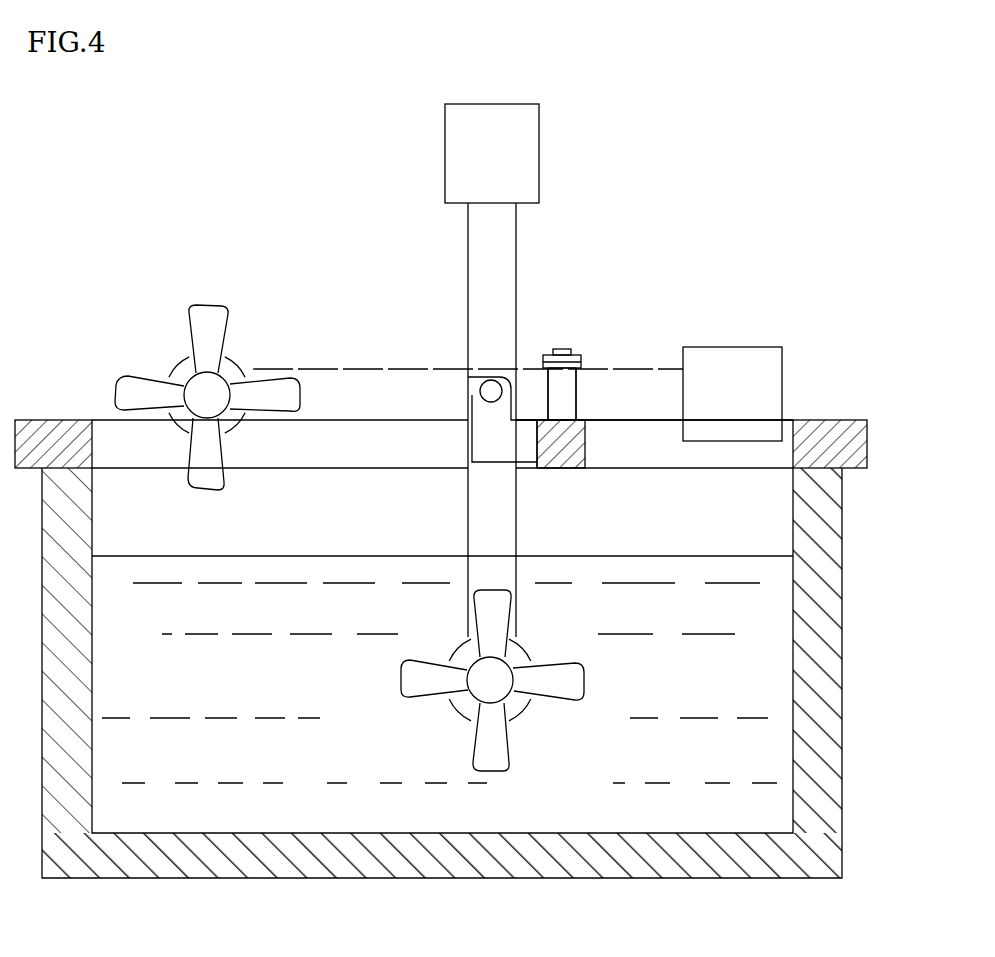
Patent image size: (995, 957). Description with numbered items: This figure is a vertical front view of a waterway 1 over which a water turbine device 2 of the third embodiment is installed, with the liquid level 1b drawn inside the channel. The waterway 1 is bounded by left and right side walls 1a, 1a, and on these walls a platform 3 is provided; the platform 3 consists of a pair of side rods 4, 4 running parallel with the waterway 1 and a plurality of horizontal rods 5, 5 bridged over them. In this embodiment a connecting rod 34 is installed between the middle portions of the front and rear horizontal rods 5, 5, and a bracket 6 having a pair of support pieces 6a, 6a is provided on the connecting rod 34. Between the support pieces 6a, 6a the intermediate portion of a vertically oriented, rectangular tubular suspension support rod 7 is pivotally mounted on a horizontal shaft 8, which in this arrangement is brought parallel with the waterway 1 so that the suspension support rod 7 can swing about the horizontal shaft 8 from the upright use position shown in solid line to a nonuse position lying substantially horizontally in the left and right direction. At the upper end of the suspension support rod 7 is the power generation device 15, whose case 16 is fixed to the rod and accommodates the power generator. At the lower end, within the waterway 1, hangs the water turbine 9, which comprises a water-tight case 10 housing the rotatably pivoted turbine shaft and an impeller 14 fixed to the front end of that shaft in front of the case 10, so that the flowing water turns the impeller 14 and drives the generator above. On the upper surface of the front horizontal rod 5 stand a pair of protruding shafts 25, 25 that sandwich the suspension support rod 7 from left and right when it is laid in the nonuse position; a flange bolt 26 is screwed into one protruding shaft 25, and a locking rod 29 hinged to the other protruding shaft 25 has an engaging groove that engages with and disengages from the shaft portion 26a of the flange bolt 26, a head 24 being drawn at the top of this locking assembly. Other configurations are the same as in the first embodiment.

The waterway 1 is at (463, 673).
The side wall 1a is at (92, 680).
The liquid surface 1b is at (708, 556).
The water turbine device 2 is at (447, 267).
The platform 3 is at (820, 407).
The side rod 4 is at (798, 418).
The horizontal rod 5 is at (724, 418).
The bracket 6 is at (443, 421).
The support piece 6a is at (468, 440).
The suspension support rod 7 is at (468, 325).
The horizontal shaft 8 is at (472, 392).
The water turbine 9 is at (349, 518).
The water-tight case 10 is at (450, 712).
The impeller 14 is at (402, 680).
The power generation device 15 is at (526, 123).
The case 16 is at (545, 157).
The sensor head 24 is at (576, 339).
The protruding shaft 25 is at (578, 398).
The flange bolt 26 is at (608, 334).
The shaft portion 26a is at (578, 383).
The locking rod 29 is at (581, 372).
The connecting rod 34 is at (588, 445).